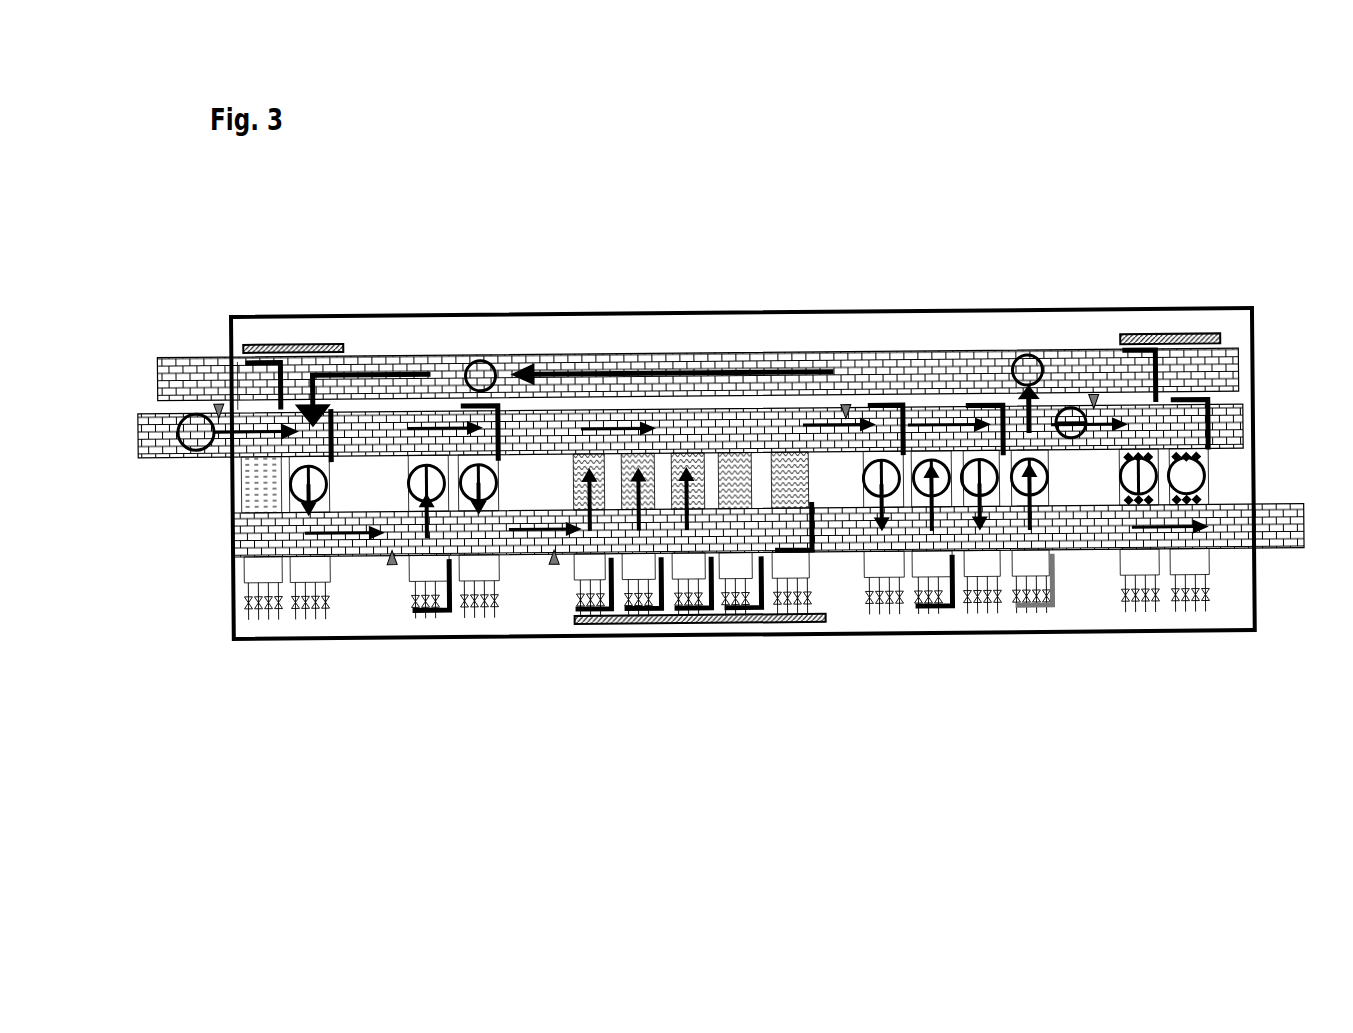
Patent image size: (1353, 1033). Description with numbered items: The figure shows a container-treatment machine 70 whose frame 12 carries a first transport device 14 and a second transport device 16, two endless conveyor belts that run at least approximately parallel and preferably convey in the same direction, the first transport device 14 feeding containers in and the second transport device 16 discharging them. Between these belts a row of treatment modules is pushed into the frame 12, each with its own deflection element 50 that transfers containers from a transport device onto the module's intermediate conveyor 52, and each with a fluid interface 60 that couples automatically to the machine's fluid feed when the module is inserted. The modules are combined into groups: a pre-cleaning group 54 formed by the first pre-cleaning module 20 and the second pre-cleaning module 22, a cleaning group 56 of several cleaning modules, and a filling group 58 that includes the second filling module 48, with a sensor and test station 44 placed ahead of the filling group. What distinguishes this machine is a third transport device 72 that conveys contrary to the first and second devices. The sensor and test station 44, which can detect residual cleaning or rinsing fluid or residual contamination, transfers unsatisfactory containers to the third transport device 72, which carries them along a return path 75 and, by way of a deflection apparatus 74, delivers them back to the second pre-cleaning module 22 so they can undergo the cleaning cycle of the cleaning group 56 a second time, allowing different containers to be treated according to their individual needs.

The frame 12 is at (682, 317).
The first transport device 14 is at (150, 407).
The second transport device 16 is at (1088, 547).
The first pre-cleaning module 20 is at (240, 580).
The second pre-cleaning module 22 is at (309, 597).
The sensor and test station 44 is at (1012, 557).
The second filling module 48 is at (1207, 396).
The deflection element 50 is at (425, 619).
The intermediate conveyor 52 is at (310, 569).
The pre-cleaning group 54 is at (263, 293).
The cleaning group 56 is at (669, 673).
The filling group 58 is at (1212, 291).
The fluid interface 60 is at (1182, 603).
The container-treatment machine 70 is at (1080, 238).
The third transport device 72 is at (901, 349).
The deflection apparatus 74 is at (300, 353).
The return path 75 is at (385, 375).